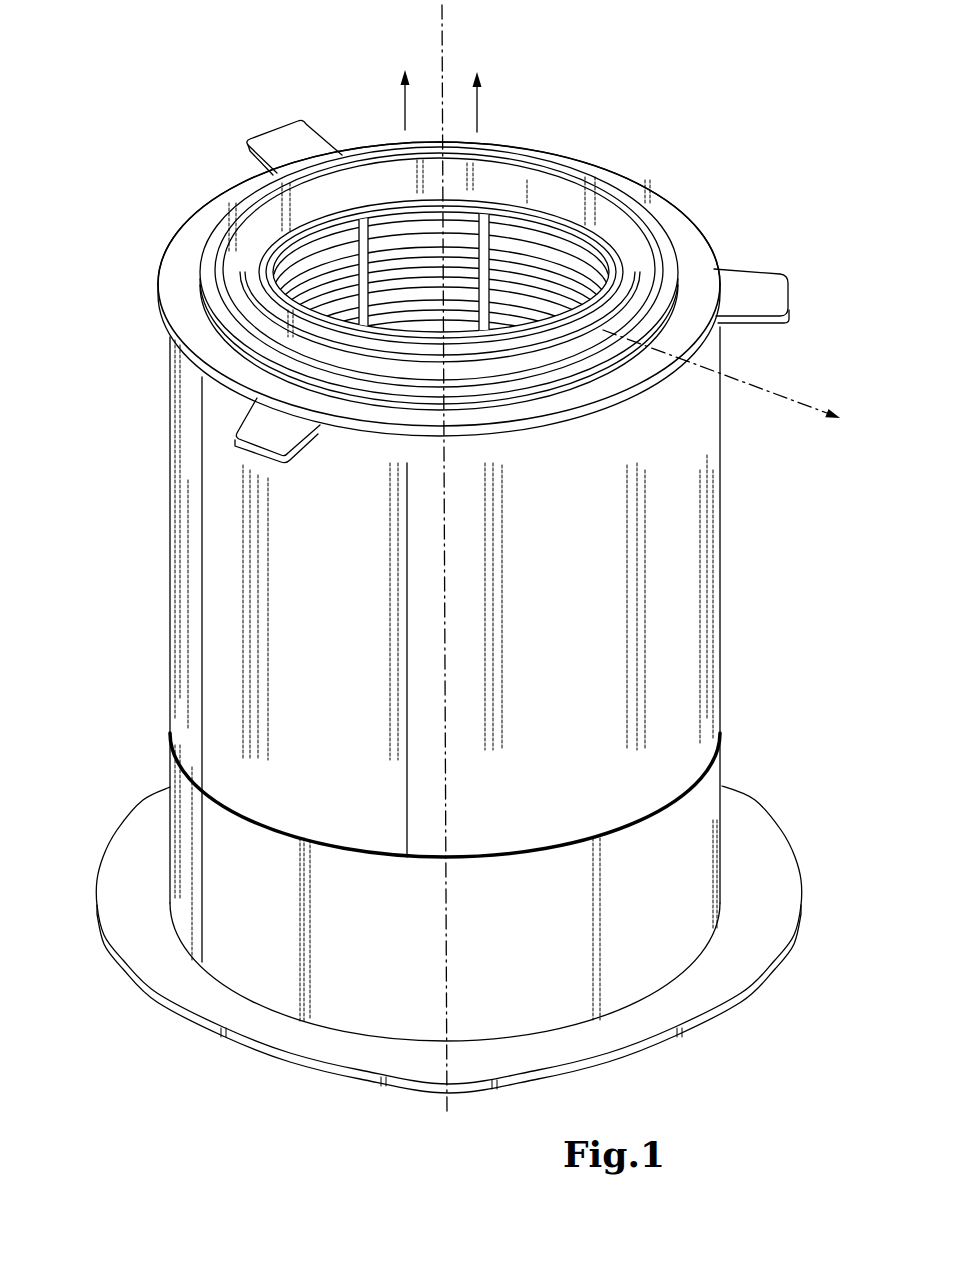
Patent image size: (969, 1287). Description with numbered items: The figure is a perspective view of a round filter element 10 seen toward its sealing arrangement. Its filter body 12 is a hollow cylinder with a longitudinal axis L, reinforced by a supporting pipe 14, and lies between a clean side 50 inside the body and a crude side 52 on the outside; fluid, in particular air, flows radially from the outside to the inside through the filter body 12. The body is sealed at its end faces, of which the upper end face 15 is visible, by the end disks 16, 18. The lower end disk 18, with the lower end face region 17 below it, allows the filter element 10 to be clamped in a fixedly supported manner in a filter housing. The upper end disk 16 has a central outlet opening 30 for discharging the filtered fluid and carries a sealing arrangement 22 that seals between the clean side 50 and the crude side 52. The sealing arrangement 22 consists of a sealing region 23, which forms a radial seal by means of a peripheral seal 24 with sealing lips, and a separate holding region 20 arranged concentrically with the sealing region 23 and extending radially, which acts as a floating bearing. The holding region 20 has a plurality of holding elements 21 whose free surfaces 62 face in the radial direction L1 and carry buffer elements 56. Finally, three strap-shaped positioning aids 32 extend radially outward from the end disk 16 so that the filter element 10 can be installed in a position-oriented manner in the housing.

The filter element 10 is at (720, 143).
The filter body 12 is at (690, 528).
The supporting pipe 14 is at (540, 240).
The end face 15 is at (643, 180).
The end disk 16 is at (178, 289).
The underside of base 17 is at (395, 1107).
The end disk 18 is at (293, 1067).
The holding region 20 is at (217, 187).
The holding element 21 is at (197, 241).
The sealing arrangement 22 is at (285, 146).
The sealing region 23 is at (358, 146).
The peripheral seal 24 is at (615, 277).
The outlet opening 30 is at (507, 197).
The positioning aid 32 is at (263, 136).
The clean side 50 is at (562, 645).
The crude side 52 is at (787, 639).
The buffer element 56 is at (232, 336).
The free surface 62 is at (232, 352).
The longitudinal axis L is at (447, 33).
The radial direction L1 is at (786, 366).